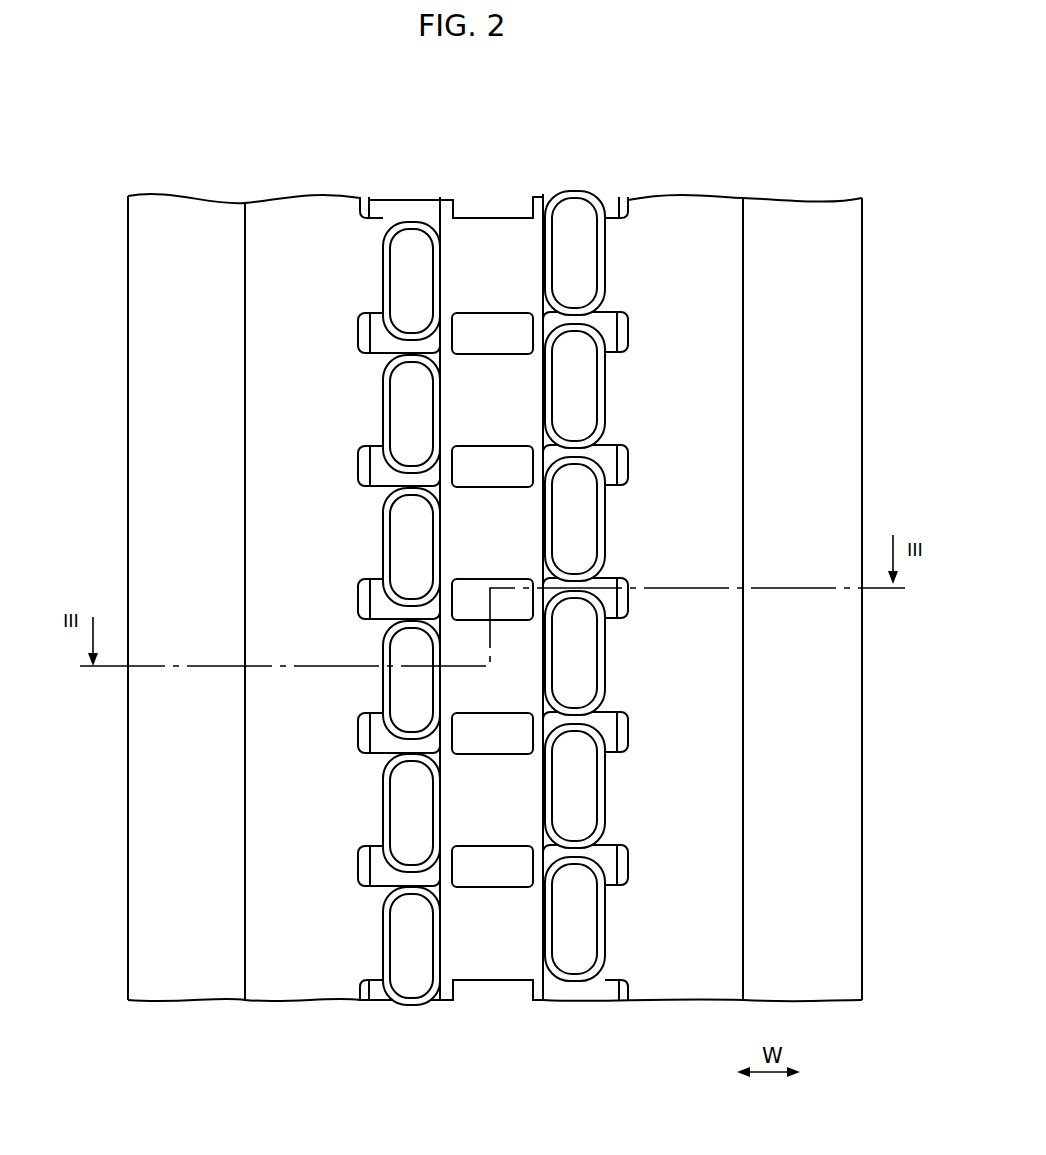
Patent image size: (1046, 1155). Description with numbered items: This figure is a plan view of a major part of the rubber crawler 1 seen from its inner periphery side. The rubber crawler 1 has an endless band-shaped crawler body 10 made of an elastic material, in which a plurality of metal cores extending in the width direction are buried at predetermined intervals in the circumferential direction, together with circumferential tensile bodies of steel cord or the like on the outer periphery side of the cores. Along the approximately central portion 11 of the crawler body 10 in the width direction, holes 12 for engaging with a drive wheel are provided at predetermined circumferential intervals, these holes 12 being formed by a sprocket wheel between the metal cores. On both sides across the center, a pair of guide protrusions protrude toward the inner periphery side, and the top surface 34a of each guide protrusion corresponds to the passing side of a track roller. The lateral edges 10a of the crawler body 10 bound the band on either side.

The rubber crawler 1 is at (882, 185).
The crawler body 10 is at (847, 345).
The tread edge 10a is at (127, 284).
The central portion 11 is at (500, 263).
The hole 12 is at (469, 320).
The top surface of guide protrusion 34a is at (405, 276).